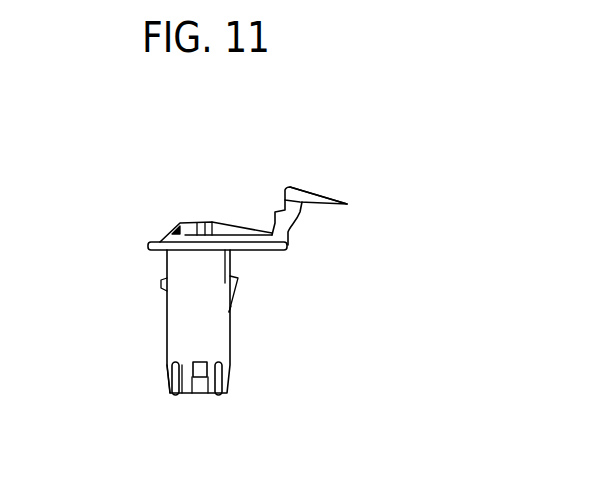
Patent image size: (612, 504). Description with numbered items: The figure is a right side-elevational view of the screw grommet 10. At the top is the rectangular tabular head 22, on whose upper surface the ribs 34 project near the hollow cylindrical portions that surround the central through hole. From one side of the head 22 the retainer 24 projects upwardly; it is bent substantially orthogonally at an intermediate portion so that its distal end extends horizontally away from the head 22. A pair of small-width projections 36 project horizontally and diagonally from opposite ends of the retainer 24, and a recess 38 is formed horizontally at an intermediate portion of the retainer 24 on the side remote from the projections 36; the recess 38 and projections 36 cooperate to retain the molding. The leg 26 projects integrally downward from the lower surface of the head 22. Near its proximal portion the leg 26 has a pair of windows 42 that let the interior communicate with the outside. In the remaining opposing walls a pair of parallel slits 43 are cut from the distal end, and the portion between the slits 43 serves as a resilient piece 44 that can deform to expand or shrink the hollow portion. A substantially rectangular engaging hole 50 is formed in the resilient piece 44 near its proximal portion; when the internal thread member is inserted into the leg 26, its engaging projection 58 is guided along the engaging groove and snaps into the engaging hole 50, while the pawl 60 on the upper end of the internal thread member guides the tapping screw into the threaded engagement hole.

The screw grommet 10 is at (382, 256).
The head 22 is at (160, 245).
The retainer 24 is at (300, 210).
The leg 26 is at (213, 338).
The ribs 34 is at (173, 223).
The projections 36 is at (327, 196).
The recess 38 is at (280, 201).
The windows 42 is at (232, 312).
The slits 43 is at (170, 390).
The resilient piece 44 is at (192, 395).
The engaging hole 50 is at (210, 395).
The engaging projection 58 is at (167, 367).
The pawl 60 is at (160, 283).